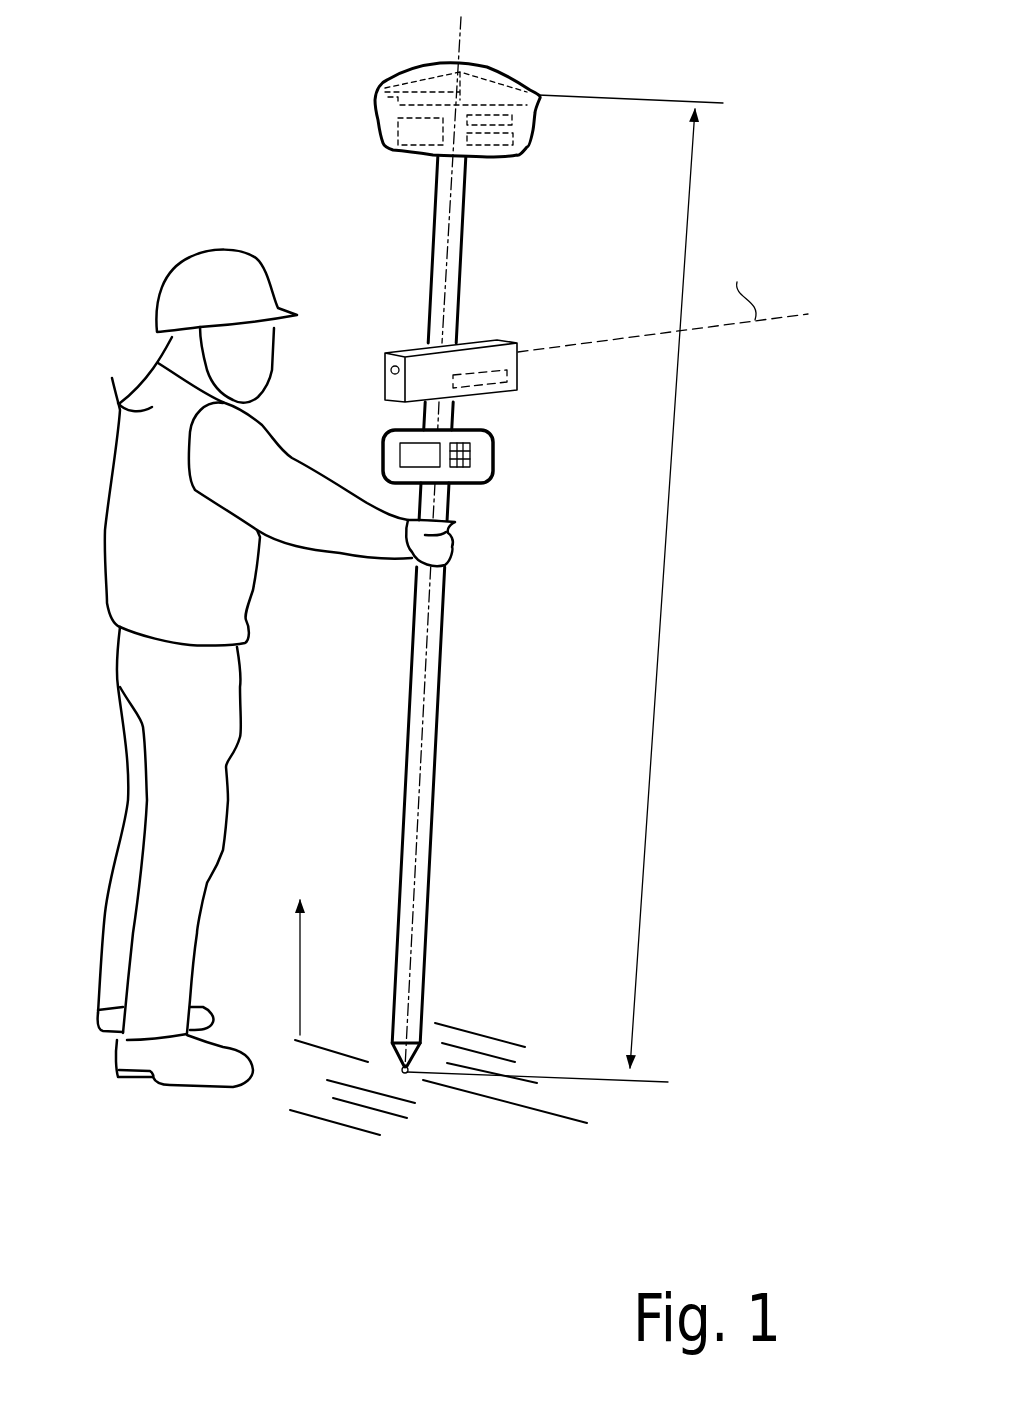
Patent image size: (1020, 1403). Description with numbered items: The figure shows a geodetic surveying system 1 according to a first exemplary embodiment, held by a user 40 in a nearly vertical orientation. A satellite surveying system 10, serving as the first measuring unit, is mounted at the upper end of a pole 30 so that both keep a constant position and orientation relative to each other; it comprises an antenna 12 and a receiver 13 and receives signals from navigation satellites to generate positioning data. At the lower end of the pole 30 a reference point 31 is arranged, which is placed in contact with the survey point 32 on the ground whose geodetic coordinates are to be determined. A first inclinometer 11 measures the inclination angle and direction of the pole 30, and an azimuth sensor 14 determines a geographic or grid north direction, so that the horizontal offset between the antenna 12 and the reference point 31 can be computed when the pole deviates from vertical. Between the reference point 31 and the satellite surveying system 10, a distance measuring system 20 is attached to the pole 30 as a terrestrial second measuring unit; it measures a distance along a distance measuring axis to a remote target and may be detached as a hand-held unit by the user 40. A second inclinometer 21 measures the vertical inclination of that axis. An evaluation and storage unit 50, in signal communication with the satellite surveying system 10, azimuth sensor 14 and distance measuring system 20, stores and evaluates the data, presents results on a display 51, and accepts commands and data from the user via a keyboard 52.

The geodetic surveying system 1 is at (219, 134).
The satellite surveying system 10 is at (528, 62).
The first inclinometer 11 is at (503, 115).
The antenna 12 is at (378, 91).
The receiver 13 is at (398, 123).
The azimuth sensor 14 is at (500, 143).
The distance measuring system 20 is at (508, 331).
The second inclinometer 21 is at (503, 377).
The pole 30 is at (432, 685).
The reference point 31 is at (400, 1066).
The survey point 32 is at (411, 1075).
The user 40 is at (112, 378).
The evaluation and storage unit 50 is at (480, 462).
The display 51 is at (412, 452).
The keyboard 52 is at (467, 468).